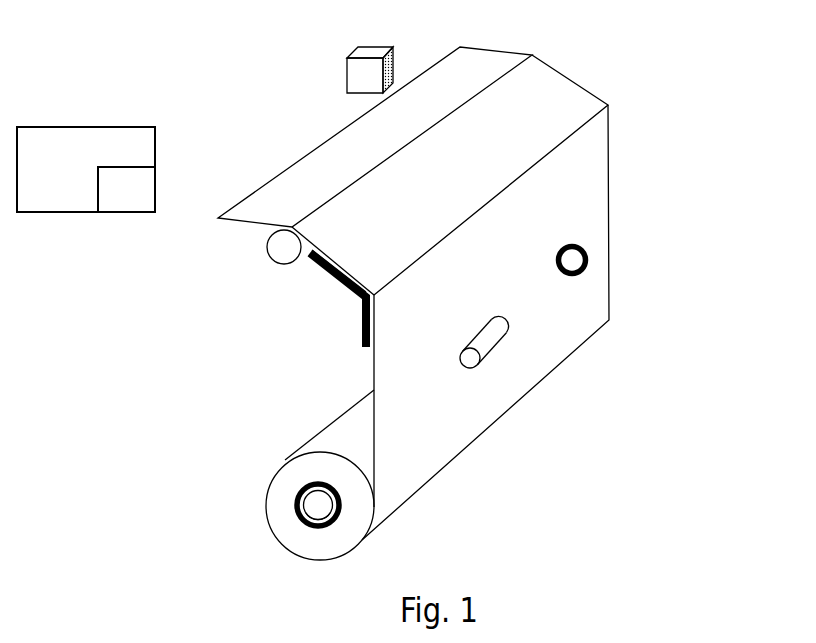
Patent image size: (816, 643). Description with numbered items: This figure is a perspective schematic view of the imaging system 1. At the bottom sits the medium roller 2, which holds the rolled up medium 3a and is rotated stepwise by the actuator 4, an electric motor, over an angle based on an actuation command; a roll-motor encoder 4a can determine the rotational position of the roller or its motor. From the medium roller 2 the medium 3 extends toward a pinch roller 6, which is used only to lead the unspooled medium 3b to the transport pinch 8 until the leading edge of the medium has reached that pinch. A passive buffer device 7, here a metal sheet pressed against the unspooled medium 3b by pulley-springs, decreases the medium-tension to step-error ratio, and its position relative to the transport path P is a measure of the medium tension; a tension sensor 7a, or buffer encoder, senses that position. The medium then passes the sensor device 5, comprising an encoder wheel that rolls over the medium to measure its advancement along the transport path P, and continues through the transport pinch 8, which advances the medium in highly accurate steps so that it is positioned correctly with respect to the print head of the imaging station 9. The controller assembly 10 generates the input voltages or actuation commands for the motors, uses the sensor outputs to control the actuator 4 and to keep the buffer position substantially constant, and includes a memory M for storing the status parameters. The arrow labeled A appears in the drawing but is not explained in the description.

The imaging system 1 is at (285, 128).
The medium roller 2 is at (293, 507).
The medium 3 is at (372, 384).
The rolled up medium 3a is at (285, 492).
The unspooled medium 3b is at (570, 185).
The actuator 4 is at (305, 527).
The roll-motor encoder 4a is at (318, 520).
The sensor device 5 is at (588, 255).
The pinch roller 6 is at (492, 340).
The passive buffer device 7 is at (360, 315).
The tension sensor 7a is at (345, 287).
The transport pinch 8 is at (268, 258).
The imaging station 9 is at (340, 62).
The controller assembly 10 is at (72, 158).
The memory M is at (112, 198).
The direction of movement A is at (296, 160).
The transport path P is at (478, 138).